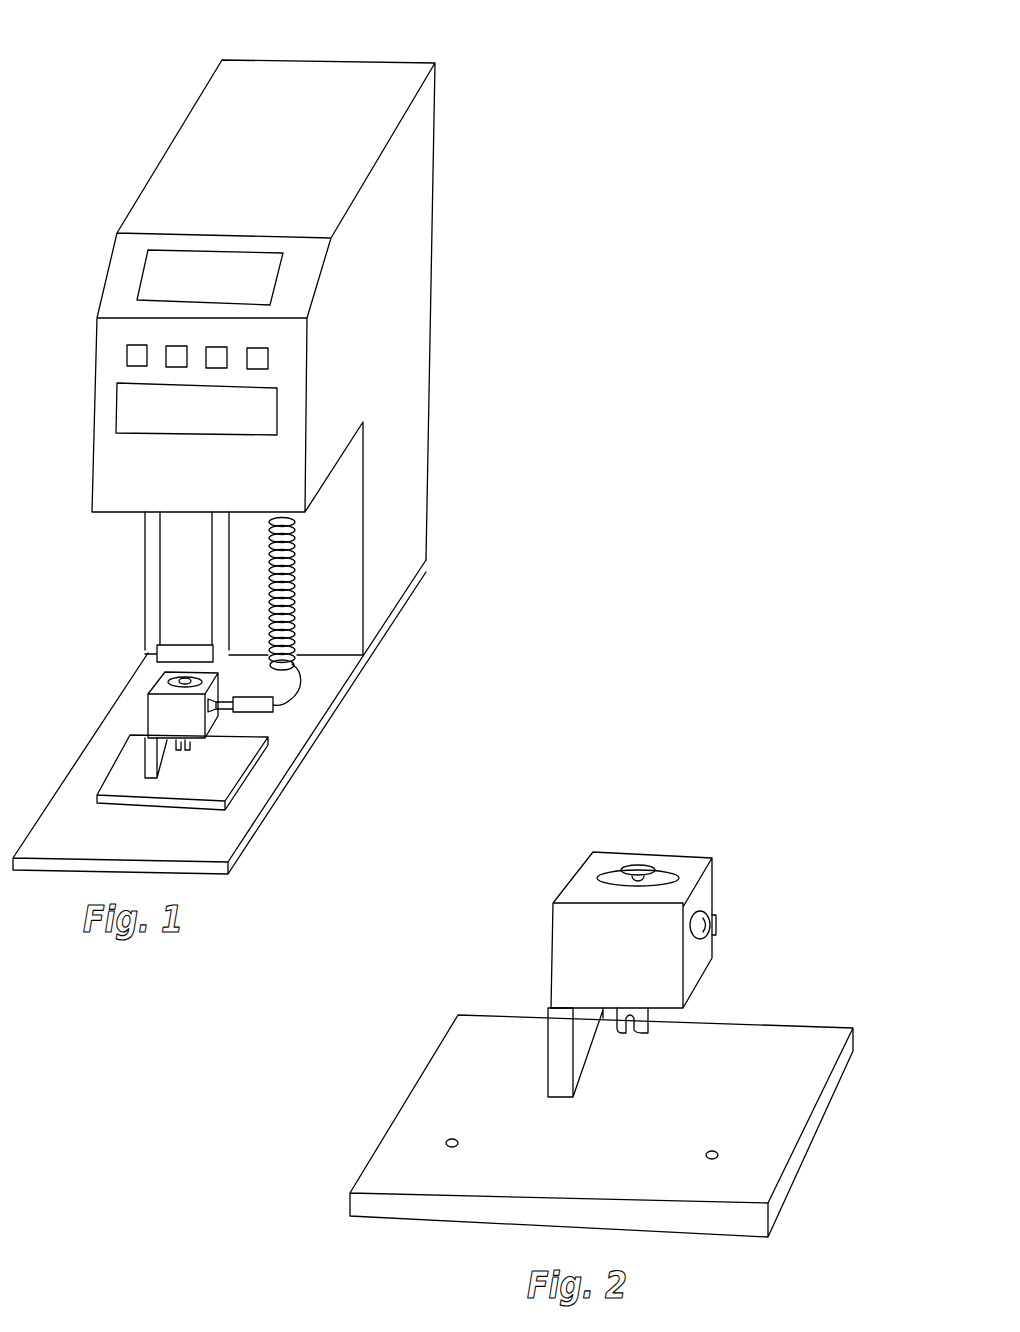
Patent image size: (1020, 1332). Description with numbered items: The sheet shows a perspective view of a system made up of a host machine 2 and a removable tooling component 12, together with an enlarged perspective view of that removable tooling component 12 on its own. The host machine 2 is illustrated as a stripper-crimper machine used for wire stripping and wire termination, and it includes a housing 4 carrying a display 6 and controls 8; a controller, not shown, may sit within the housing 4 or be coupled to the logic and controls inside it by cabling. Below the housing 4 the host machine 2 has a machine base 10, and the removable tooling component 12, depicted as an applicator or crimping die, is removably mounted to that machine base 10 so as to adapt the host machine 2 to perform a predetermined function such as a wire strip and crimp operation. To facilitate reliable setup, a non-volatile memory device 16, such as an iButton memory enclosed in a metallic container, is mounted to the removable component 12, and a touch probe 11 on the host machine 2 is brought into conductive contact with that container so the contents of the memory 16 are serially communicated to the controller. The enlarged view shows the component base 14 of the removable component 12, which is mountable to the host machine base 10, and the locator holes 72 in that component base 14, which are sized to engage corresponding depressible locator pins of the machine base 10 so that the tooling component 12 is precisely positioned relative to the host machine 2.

In FIG. 1, the host machine 2 is at (299, 446).
In FIG. 1, the housing 4 is at (411, 182).
In FIG. 1, the display 6 is at (148, 275).
In FIG. 1, the controls 8 is at (127, 352).
In FIG. 1, the machine base 10 is at (247, 813).
In FIG. 1, the touch probe 11 is at (273, 707).
In FIG. 1, the removable tooling component 12 is at (158, 707).
In FIG. 2, the removable tooling component 12 is at (688, 836).
In FIG. 2, the component base 14 is at (636, 1096).
In FIG. 2, the non-volatile memory device 16 is at (707, 913).
In FIG. 2, the locator holes 72 is at (607, 1139).